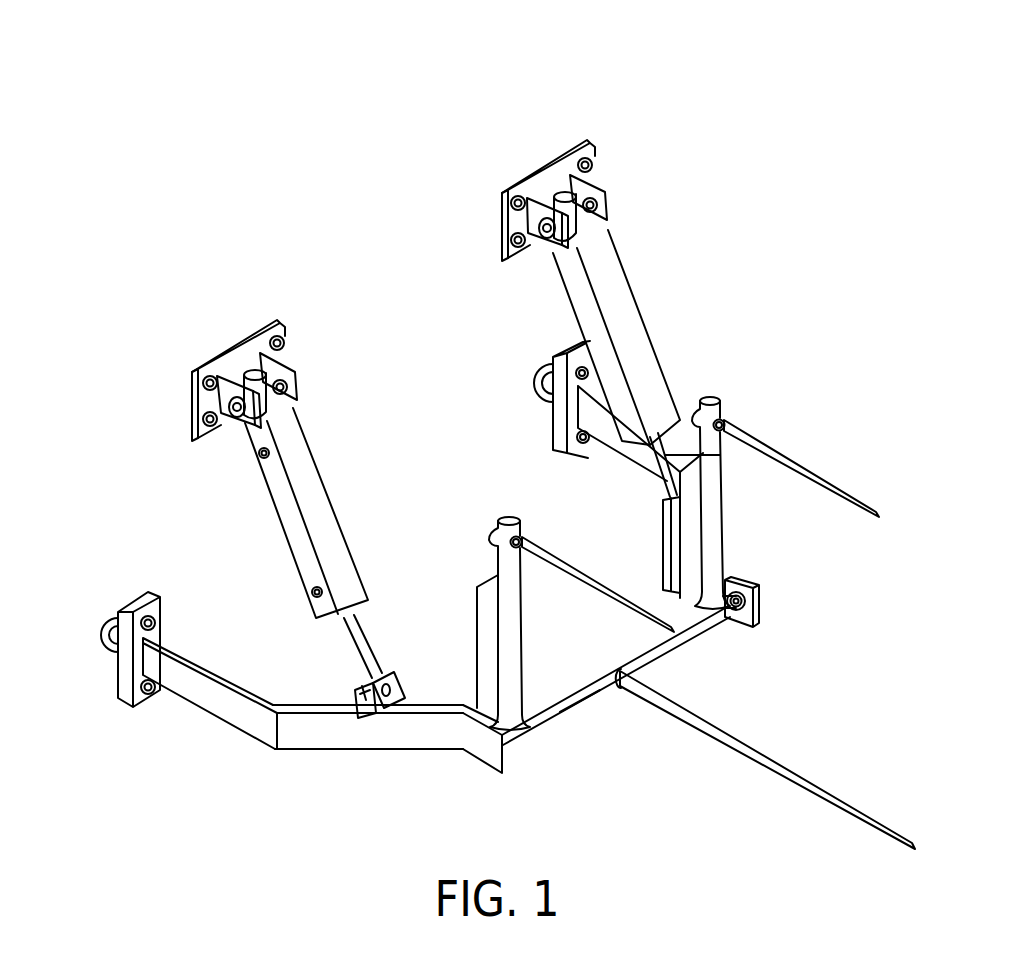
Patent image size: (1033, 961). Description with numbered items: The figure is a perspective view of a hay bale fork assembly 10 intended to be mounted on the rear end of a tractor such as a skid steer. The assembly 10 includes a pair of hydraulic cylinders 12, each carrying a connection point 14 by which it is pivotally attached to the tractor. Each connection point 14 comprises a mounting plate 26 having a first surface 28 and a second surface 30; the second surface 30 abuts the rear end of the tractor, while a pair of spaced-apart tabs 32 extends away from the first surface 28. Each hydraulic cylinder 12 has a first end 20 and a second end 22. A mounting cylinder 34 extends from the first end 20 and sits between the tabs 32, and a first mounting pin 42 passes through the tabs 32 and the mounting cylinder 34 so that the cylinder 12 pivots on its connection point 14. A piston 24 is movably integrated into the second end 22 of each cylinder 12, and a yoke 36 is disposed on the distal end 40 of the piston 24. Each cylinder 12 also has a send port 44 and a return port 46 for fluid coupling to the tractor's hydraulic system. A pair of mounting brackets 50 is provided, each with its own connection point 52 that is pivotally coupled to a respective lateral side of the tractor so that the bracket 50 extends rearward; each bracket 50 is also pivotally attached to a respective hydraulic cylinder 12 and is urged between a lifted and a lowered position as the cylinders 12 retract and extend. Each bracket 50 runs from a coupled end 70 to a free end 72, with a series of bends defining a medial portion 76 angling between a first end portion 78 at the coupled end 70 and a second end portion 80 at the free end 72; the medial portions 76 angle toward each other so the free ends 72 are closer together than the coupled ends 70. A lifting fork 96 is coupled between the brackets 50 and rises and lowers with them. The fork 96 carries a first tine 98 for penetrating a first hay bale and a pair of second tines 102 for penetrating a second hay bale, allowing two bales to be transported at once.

The hay bale fork assembly 10 is at (757, 134).
The hydraulic cylinders 12 is at (287, 542).
The connection point 14 is at (572, 122).
The first end 20 is at (297, 395).
The second end 22 is at (372, 618).
The piston 24 is at (352, 645).
The mounting plate 26 is at (198, 371).
The first surface 28 is at (233, 368).
The second surface 30 is at (193, 407).
The tabs 32 is at (524, 197).
The mounting cylinder 34 is at (562, 192).
The yoke 36 is at (352, 706).
The distal end 40 is at (398, 708).
The first mounting pins 42 is at (280, 378).
The send port 44 is at (258, 455).
The return port 46 is at (310, 596).
The mounting brackets 50 is at (267, 746).
The connection point 52 is at (122, 590).
The coupled end 70 is at (140, 657).
The free end 72 is at (503, 752).
The medial portion 76 is at (293, 758).
The first end portion 78 is at (210, 727).
The second end portion 80 is at (470, 756).
The lifting fork 96 is at (607, 709).
The first tine 98 is at (786, 770).
The second tines 102 is at (791, 462).